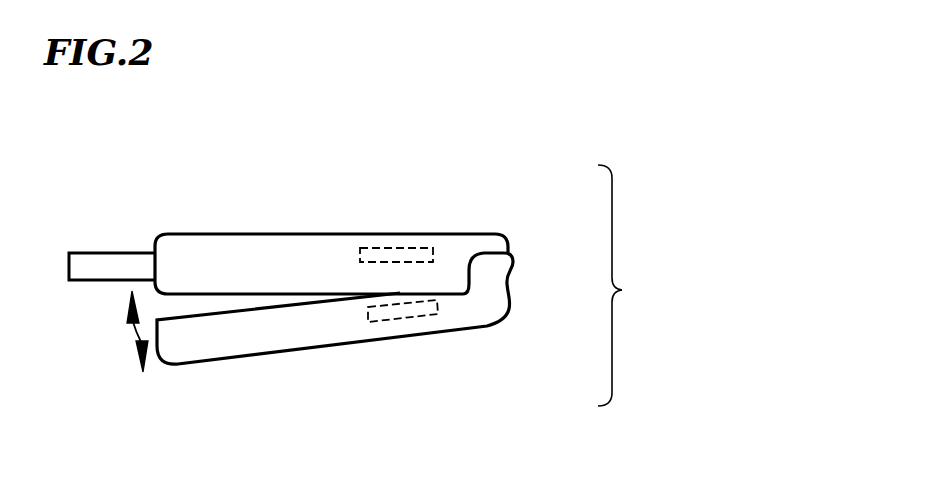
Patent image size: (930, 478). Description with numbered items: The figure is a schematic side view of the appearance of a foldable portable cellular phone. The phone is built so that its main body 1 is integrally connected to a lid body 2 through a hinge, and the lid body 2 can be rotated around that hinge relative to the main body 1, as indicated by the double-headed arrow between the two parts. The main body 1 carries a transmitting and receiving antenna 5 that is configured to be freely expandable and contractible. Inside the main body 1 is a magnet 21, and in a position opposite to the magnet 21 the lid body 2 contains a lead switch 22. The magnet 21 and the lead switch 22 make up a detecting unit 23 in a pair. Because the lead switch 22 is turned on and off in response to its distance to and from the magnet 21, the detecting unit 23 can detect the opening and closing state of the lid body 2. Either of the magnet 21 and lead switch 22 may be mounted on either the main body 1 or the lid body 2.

The main body 1 is at (223, 235).
The lid body 2 is at (265, 355).
The transmitting and receiving antenna 5 is at (83, 282).
The magnet 21 is at (418, 247).
The lead switch 22 is at (432, 316).
The detecting unit 23 is at (700, 285).